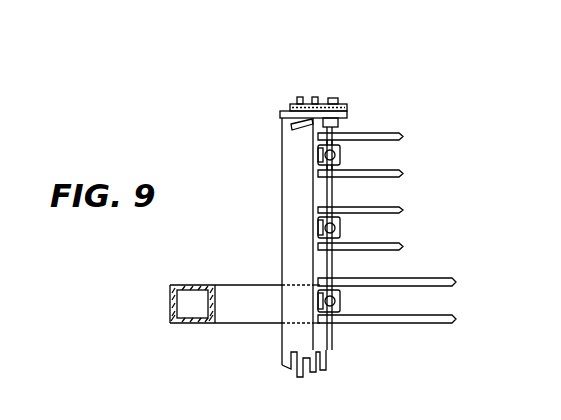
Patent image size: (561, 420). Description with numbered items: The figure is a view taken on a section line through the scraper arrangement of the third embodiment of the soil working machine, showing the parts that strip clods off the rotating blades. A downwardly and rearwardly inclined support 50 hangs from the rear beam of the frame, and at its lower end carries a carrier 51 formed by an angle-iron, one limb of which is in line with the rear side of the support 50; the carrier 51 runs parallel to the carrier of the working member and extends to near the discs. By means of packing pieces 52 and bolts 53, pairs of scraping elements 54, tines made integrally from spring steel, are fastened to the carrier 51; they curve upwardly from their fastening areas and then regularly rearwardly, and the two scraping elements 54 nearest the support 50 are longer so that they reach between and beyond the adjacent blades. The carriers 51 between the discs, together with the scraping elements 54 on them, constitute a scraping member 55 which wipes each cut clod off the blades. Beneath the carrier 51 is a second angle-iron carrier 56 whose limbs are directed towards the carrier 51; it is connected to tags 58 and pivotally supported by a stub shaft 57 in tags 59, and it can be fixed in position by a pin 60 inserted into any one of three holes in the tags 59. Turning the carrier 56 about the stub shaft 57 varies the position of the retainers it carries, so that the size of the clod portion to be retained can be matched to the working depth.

The support 50 is at (240, 265).
The carrier 51 is at (295, 192).
The packing piece 52 is at (318, 154).
The bolt 53 is at (340, 155).
The scraping element 54 is at (403, 173).
The scraping member 55 is at (432, 325).
The carrier 56 is at (293, 372).
The stub shaft 57 is at (335, 99).
The tag 58 is at (299, 98).
The tag 59 is at (282, 113).
The pin 60 is at (315, 98).